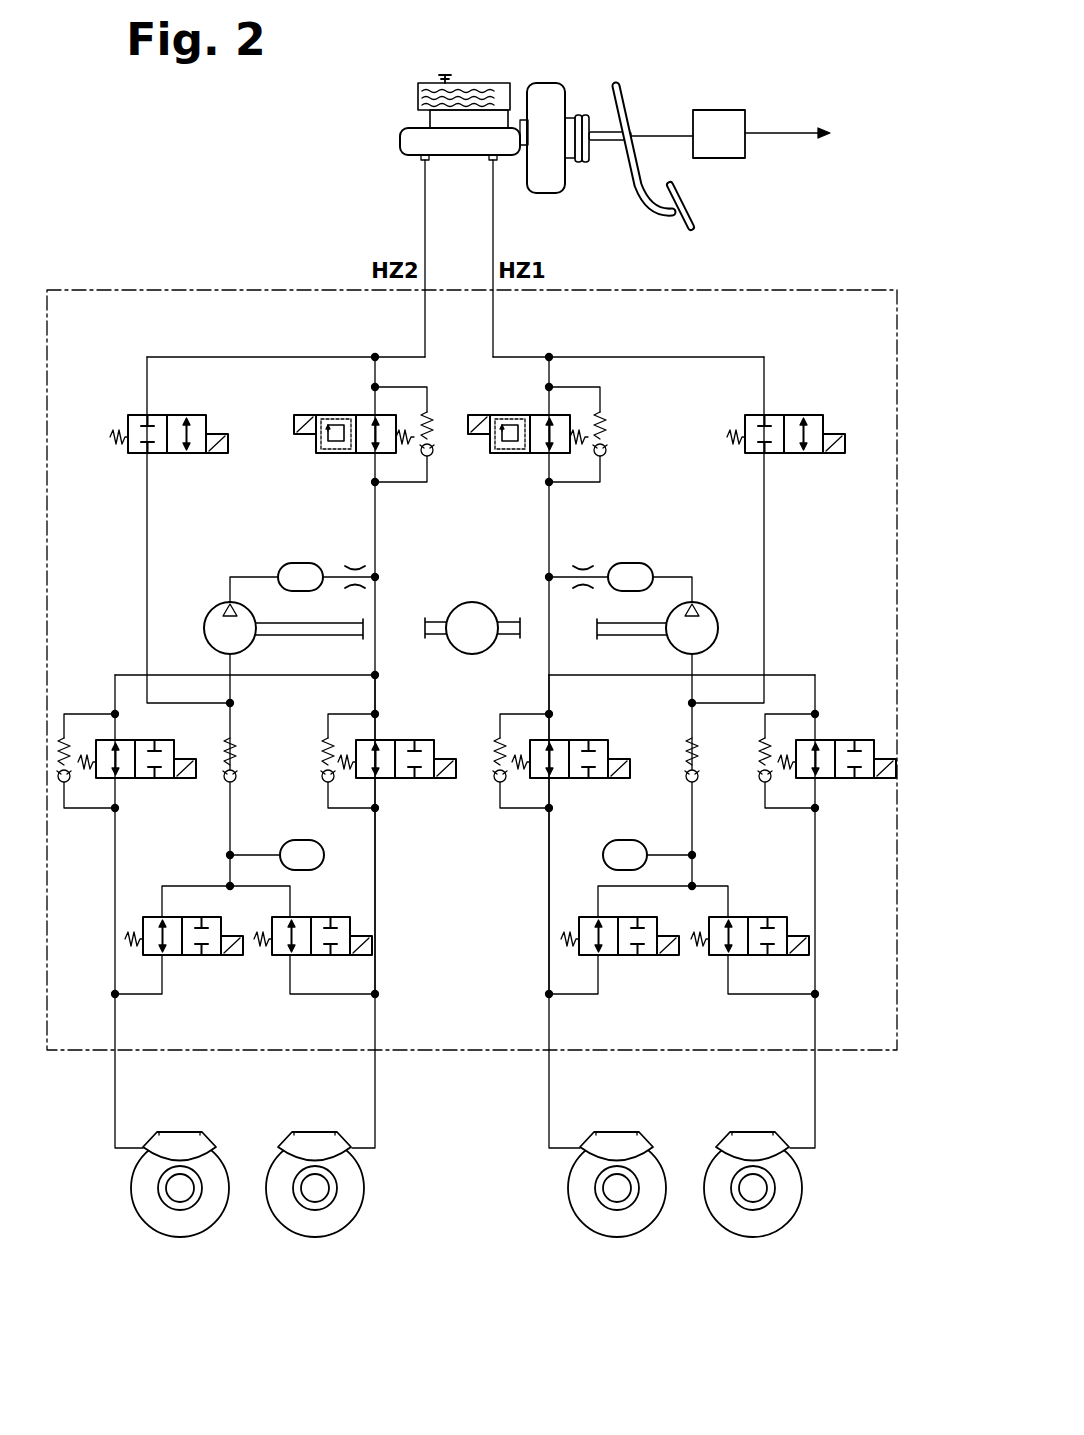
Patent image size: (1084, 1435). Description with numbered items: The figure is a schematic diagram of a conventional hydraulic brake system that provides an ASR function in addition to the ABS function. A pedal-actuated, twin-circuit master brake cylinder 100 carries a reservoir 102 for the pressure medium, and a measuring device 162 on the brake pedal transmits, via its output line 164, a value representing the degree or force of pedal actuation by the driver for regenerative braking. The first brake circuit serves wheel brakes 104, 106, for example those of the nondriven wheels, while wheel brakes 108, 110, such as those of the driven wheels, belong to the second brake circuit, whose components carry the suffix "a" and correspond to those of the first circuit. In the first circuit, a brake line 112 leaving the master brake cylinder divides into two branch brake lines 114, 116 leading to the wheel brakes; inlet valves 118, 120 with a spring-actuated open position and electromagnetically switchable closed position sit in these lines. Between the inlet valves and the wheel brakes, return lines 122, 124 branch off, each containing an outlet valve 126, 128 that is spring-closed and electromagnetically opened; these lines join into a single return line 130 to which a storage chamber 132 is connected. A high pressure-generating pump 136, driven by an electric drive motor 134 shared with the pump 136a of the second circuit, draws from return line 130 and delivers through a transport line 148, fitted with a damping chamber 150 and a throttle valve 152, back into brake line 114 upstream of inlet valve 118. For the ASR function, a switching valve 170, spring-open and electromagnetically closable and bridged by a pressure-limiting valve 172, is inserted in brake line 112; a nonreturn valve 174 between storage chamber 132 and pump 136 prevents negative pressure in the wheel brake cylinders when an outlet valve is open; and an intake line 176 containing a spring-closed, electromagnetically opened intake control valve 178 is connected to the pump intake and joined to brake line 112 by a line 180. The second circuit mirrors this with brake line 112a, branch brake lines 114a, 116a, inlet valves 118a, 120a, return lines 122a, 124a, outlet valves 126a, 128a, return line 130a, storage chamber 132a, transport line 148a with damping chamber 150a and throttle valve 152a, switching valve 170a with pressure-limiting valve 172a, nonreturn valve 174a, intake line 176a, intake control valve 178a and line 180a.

The master brake cylinder 100 is at (548, 80).
The reservoir 102 is at (478, 85).
The wheel brake 104 is at (755, 1128).
The wheel brake 106 is at (619, 1128).
The wheel brake 108 is at (182, 1128).
The wheel brake 110 is at (317, 1128).
The brake line 112 is at (497, 218).
The brake line 112a is at (425, 207).
The branch brake line 114 is at (547, 889).
The branch brake line 114a is at (375, 855).
The branch brake line 116 is at (788, 675).
The branch brake line 116a is at (135, 675).
The inlet valve 118 is at (590, 737).
The inlet valve 118a is at (405, 740).
The inlet valve 120 is at (852, 737).
The inlet valve 120a is at (145, 782).
The return line 122 is at (575, 996).
The return line 122a is at (340, 996).
The return line 124 is at (800, 996).
The return line 124a is at (138, 995).
The outlet valve 126 is at (636, 958).
The outlet valve 126a is at (315, 917).
The outlet valve 128 is at (750, 910).
The outlet valve 128a is at (200, 958).
The return line 130 is at (694, 868).
The return line 130a is at (230, 874).
The storage chamber 132 is at (625, 836).
The storage chamber 132a is at (300, 838).
The electric drive motor 134 is at (452, 603).
The pump 136 is at (710, 605).
The pump 136a is at (210, 620).
The transport line 148 is at (672, 576).
The transport line 148a is at (238, 576).
The damping chamber 150 is at (636, 560).
The damping chamber 150a is at (296, 560).
The throttle valve 152 is at (585, 565).
The throttle valve 152a is at (357, 565).
The measuring device 162 is at (727, 115).
The output line 164 is at (786, 130).
The switching valve 170 is at (520, 410).
The switching valve 170a is at (345, 410).
The pressure-limiting valve 172 is at (608, 450).
The pressure-limiting valve 172a is at (440, 458).
The nonreturn valve 174 is at (700, 760).
The nonreturn valve 174a is at (237, 760).
The intake line 176 is at (766, 544).
The intake line 176a is at (147, 554).
The intake control valve 178 is at (783, 410).
The intake control valve 178a is at (137, 410).
The line 180 is at (690, 357).
The line 180a is at (247, 357).